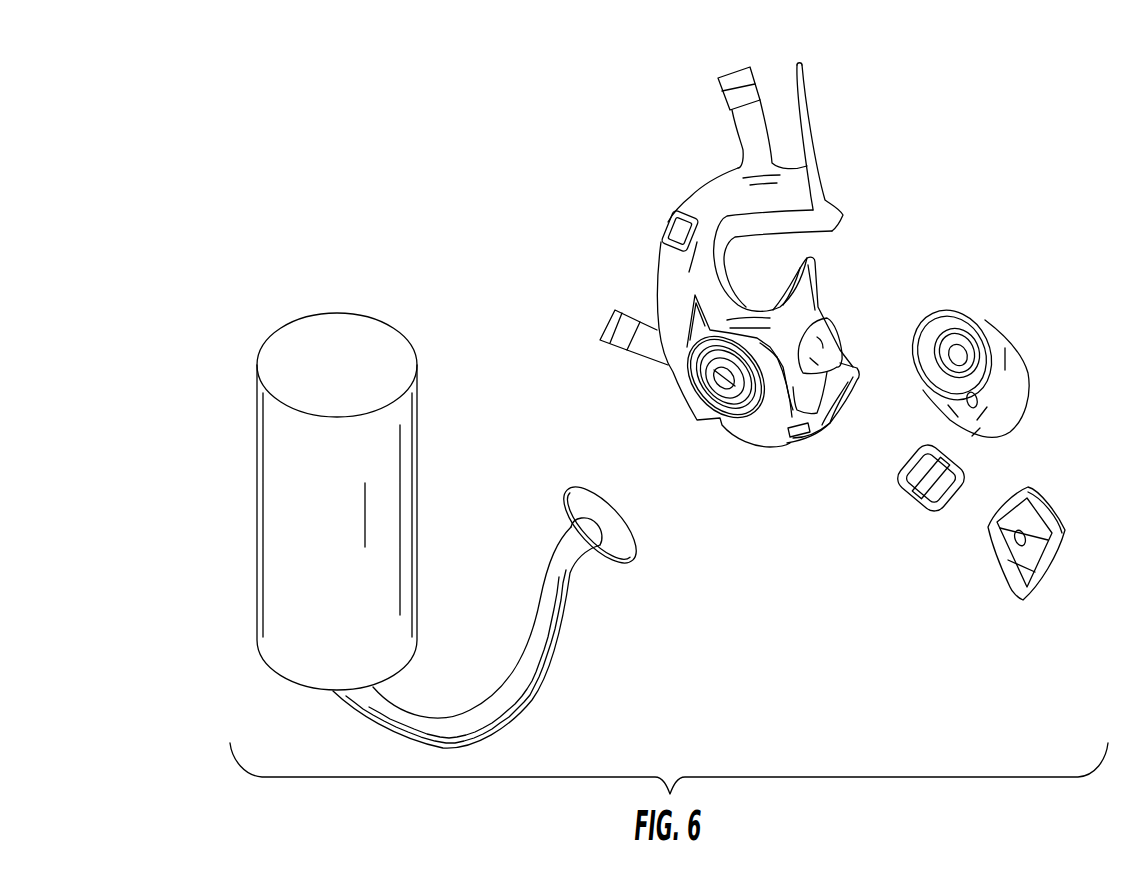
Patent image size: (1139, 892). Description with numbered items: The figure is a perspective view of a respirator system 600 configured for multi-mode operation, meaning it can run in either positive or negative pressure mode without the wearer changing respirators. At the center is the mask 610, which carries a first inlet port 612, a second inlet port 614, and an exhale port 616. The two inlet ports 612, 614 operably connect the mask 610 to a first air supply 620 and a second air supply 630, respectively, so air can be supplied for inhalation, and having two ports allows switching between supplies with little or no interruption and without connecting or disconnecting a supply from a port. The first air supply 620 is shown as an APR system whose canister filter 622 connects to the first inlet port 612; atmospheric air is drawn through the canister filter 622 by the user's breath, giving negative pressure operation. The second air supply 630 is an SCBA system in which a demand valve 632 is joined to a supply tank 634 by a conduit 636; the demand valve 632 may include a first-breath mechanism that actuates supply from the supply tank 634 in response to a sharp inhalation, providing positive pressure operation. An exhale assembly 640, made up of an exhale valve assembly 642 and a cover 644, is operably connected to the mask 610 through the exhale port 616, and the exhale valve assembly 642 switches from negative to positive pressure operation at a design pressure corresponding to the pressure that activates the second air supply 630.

The respirator system 600 is at (470, 97).
The mask 610 is at (744, 314).
The first inlet port 612 is at (833, 333).
The second inlet port 614 is at (713, 433).
The exhale port 616 is at (822, 448).
The first air supply 620 is at (996, 365).
The canister filter 622 is at (1030, 397).
The second air supply 630 is at (314, 457).
The demand valve 632 is at (630, 560).
The supply tank 634 is at (285, 520).
The conduit 636 is at (540, 697).
The exhale assembly 640 is at (984, 537).
The exhale valve assembly 642 is at (917, 508).
The cover 644 is at (1052, 496).